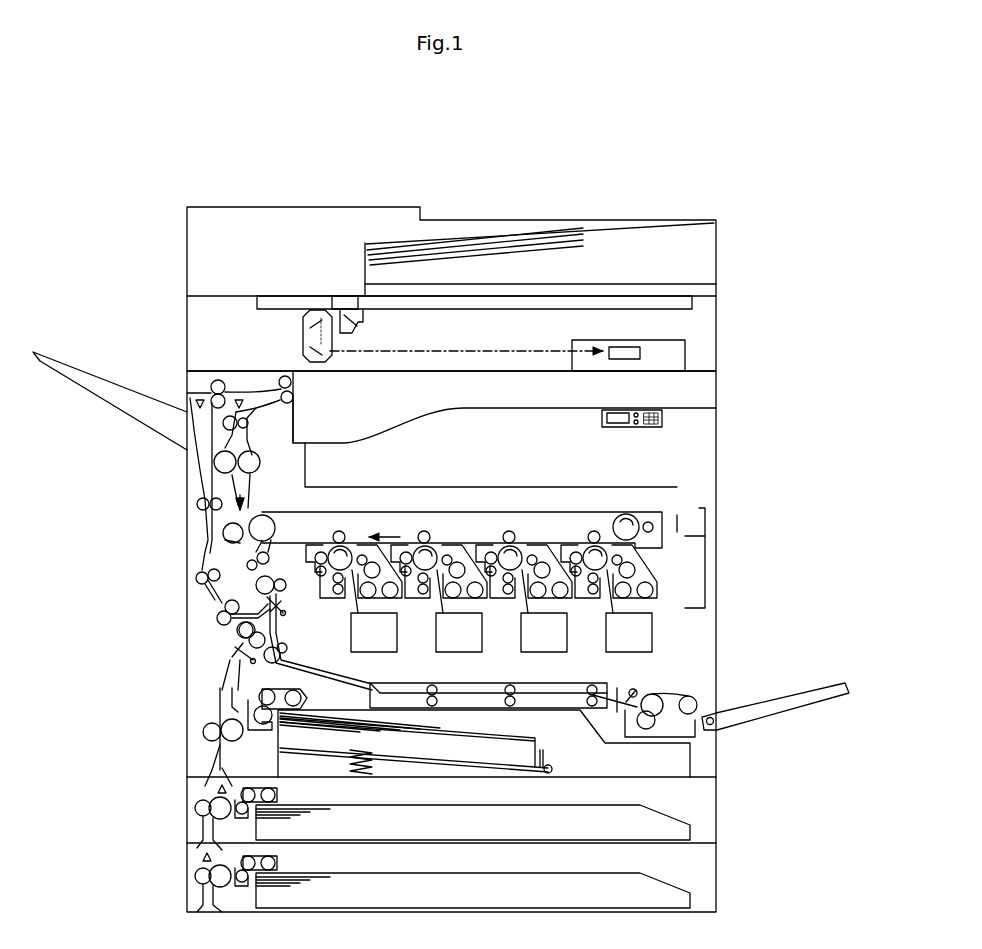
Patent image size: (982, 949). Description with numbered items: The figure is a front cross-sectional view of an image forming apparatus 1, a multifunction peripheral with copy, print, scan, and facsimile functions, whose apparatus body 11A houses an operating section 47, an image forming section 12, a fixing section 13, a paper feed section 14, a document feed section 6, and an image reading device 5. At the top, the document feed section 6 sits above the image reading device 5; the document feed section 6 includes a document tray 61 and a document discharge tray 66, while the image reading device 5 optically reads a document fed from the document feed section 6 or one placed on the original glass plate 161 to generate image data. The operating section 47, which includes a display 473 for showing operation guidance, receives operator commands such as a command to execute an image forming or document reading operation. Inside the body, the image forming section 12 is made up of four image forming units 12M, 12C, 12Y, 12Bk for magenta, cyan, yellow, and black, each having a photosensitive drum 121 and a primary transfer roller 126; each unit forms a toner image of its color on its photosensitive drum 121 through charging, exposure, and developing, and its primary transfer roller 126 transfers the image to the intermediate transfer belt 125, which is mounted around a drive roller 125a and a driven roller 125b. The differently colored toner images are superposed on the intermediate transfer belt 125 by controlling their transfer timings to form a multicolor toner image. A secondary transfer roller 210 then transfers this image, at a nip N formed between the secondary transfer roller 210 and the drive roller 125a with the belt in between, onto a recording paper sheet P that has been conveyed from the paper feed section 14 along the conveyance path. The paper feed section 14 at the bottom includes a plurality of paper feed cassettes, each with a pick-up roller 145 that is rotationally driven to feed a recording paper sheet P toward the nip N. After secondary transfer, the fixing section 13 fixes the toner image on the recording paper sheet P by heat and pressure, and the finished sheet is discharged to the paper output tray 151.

The image forming apparatus 1 is at (791, 275).
The image reading device 5 is at (172, 327).
The document feed section 6 is at (569, 209).
The document tray 61 is at (625, 230).
The document discharge tray 66 is at (633, 282).
The original glass plate 161 is at (586, 302).
The apparatus body 11A is at (720, 431).
The operating section 47 is at (664, 421).
The display 473 is at (620, 412).
The paper output tray 151 is at (328, 443).
The image forming section 12 is at (550, 555).
The image forming unit for black 12Bk is at (351, 532).
The image forming unit for yellow 12Y is at (427, 532).
The image forming unit for cyan 12C is at (511, 532).
The image forming unit for magenta 12M is at (609, 555).
The photosensitive drum 121 is at (590, 612).
The intermediate transfer belt 125 is at (625, 517).
The drive roller 125a is at (263, 521).
The driven roller 125b is at (632, 516).
The primary transfer roller 126 is at (580, 515).
The fixing section 13 is at (206, 462).
The nip N is at (218, 505).
The secondary transfer roller 210 is at (222, 538).
The pick-up roller 145 is at (250, 862).
The paper feed section 14 is at (697, 802).
The recording paper sheet P is at (527, 731).